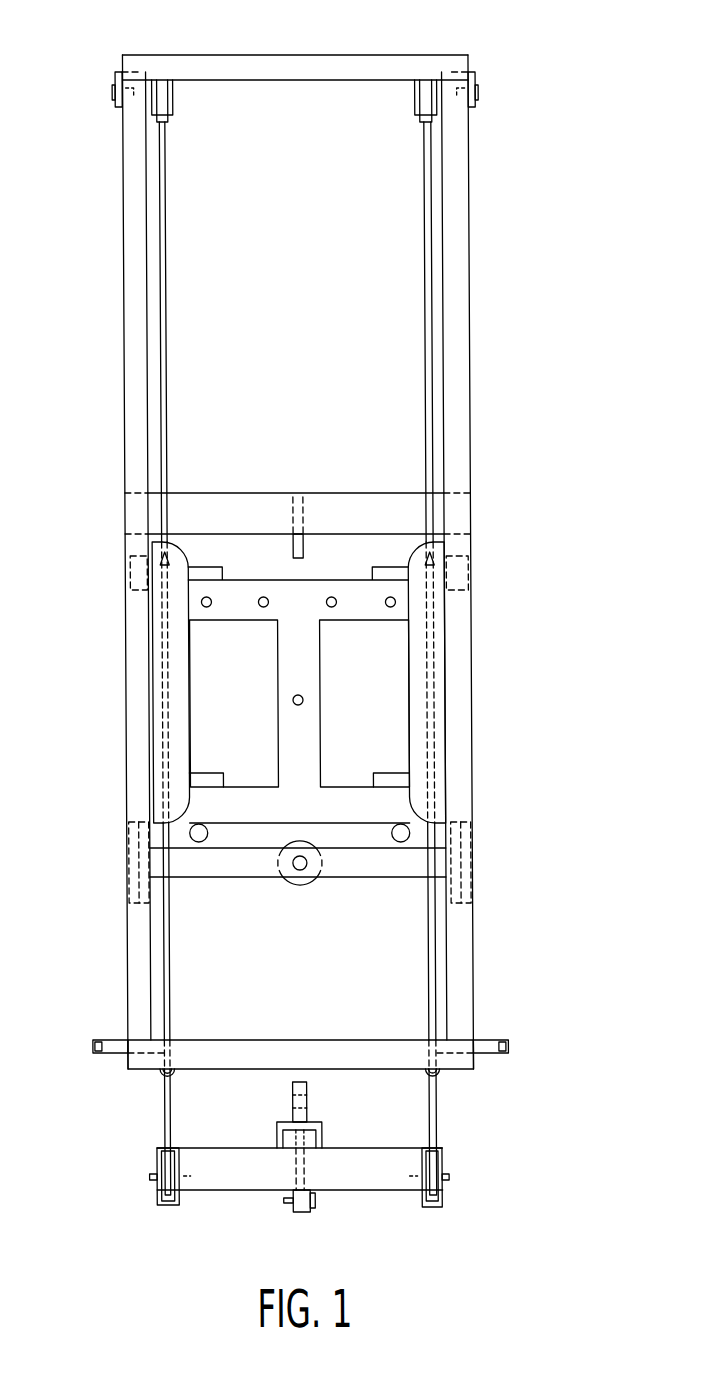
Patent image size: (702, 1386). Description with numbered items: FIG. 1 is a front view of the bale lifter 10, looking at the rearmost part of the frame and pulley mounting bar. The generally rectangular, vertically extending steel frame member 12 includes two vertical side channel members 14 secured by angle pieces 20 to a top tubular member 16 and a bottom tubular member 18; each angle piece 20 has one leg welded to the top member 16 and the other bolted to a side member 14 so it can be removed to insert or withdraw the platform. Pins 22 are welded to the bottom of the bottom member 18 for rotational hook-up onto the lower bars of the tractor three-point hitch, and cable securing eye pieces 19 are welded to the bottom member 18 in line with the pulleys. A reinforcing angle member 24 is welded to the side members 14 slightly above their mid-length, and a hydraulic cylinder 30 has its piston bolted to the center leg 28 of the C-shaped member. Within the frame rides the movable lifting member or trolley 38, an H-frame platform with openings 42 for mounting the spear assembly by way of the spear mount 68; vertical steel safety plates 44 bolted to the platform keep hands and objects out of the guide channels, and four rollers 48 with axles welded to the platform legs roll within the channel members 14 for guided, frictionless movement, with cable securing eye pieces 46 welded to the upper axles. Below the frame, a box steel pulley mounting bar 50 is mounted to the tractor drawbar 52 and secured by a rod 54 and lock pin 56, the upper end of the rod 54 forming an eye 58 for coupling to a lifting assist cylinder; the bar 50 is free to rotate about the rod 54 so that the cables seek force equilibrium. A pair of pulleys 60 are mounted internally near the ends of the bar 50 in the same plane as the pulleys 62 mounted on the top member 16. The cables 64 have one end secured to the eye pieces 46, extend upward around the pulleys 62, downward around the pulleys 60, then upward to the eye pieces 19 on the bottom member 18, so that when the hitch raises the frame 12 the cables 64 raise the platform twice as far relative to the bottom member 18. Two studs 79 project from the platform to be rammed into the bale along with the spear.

The bale lifter 10 is at (511, 195).
The frame member 12 is at (120, 268).
The side channel member 14 is at (476, 288).
The top tubular member 16 is at (317, 67).
The bottom tubular member 18 is at (358, 1048).
The cable securing eye piece 19 is at (160, 1076).
The angle piece 20 is at (485, 83).
The pin 22 is at (93, 1040).
The reinforcing angle member 24 is at (263, 512).
The center leg 28 is at (355, 867).
The hydraulic cylinder 30 is at (299, 886).
The lifting member or trolley 38 is at (266, 761).
The opening 42 is at (302, 697).
The safety plate 44 is at (178, 698).
The cable securing eye piece 46 is at (408, 553).
The roller 48 is at (471, 548).
The pulley mounting bar 50 is at (370, 1182).
The drawbar 52 is at (314, 1138).
The rod 54 is at (297, 1215).
The lock pin 56 is at (312, 1200).
The eye 58 is at (290, 1090).
The pulley 60 is at (153, 1192).
The pulley 62 is at (419, 97).
The cable 64 is at (428, 422).
The spear mount 68 is at (293, 550).
The stud 79 is at (197, 843).